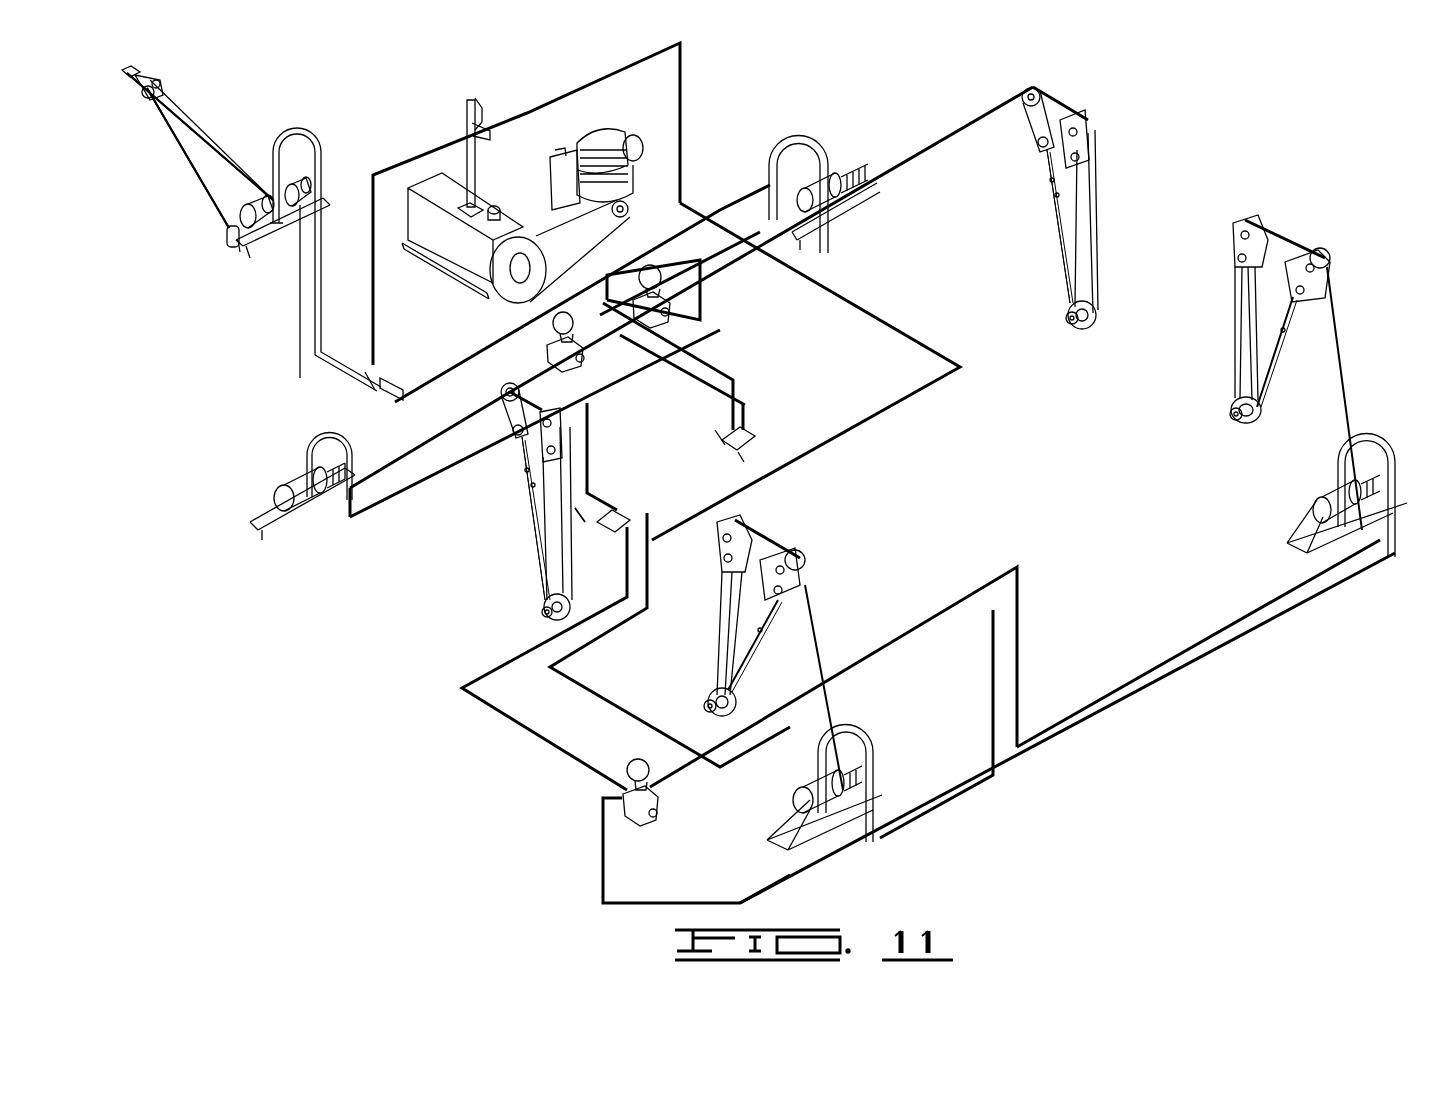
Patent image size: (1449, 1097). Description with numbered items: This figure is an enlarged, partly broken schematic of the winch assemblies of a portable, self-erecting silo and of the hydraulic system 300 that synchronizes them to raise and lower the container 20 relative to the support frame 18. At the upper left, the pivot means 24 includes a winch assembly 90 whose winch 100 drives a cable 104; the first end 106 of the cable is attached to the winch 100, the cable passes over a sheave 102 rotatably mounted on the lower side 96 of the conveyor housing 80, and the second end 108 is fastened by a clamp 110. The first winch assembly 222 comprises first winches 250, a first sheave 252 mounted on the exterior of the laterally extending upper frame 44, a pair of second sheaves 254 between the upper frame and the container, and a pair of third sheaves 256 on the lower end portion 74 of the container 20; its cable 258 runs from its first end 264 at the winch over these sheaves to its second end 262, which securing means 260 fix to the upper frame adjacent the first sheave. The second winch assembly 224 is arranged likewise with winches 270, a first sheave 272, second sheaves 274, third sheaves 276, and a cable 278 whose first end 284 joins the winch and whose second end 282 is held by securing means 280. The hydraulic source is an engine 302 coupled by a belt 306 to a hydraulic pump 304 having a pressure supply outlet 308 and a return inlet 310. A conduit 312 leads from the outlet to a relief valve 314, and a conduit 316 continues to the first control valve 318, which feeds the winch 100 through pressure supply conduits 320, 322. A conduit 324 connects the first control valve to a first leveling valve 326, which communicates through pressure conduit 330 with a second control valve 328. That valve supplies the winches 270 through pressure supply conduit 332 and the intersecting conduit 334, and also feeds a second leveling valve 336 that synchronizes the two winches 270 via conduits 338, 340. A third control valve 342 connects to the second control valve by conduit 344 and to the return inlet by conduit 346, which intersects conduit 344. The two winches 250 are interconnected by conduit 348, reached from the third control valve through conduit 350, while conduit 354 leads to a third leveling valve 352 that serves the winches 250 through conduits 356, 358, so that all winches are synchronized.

The hydraulic system 300 is at (752, 88).
The engine 302 is at (598, 118).
The hydraulic pump 304 is at (460, 258).
The belt 306 is at (575, 262).
The pressure supply outlet 308 is at (475, 203).
The return inlet 310 is at (462, 215).
The conduit 312 is at (476, 165).
The relief valve 314 is at (487, 127).
The conduit 316 is at (374, 292).
The first control valve 318 is at (400, 386).
The pressure supply conduit 320 is at (322, 278).
The pressure supply conduit 322 is at (299, 297).
The conduit 324 is at (518, 342).
The first leveling valve 326 is at (578, 372).
The second control valve 328 is at (610, 508).
The pressure conduit 330 is at (588, 443).
The pressure supply conduit 332 is at (648, 571).
The pressure supply conduit 334 is at (955, 800).
The second leveling valve 336 is at (652, 818).
The conduit 338 is at (805, 868).
The conduit 340 is at (930, 610).
The third control valve 342 is at (756, 430).
The conduit 344 is at (700, 410).
The conduit 346 is at (872, 312).
The conduit 348 is at (780, 270).
The conduit 350 is at (745, 408).
The third leveling valve 352 is at (650, 262).
The conduit 354 is at (712, 362).
The conduit 356 is at (372, 506).
The conduit 358 is at (690, 236).
The first winch 250 is at (300, 490).
The first winch assembly 222 is at (312, 510).
The first end of cable 264 is at (320, 455).
The first sheave 252 is at (507, 384).
The pair of second sheaves 254 is at (572, 420).
The pair of third sheaves 256 is at (568, 600).
The cable 258 is at (530, 560).
The securing means 260 is at (528, 470).
The second end of cable 262 is at (532, 488).
The support frame 18 is at (503, 440).
The laterally extending upper frame 44 is at (508, 414).
The lower end portion of container 74 is at (540, 610).
The container 20 is at (540, 622).
The pair of second sheaves 274 is at (745, 515).
The first sheave 272 is at (802, 550).
The pair of third sheaves 276 is at (738, 696).
The cable 278 is at (815, 610).
The securing means 280 is at (762, 628).
The second end of cable 282 is at (775, 600).
The first end of cable 284 is at (852, 752).
The winch 270 is at (845, 775).
The second winch assembly 224 is at (808, 790).
The pivot means 24 is at (186, 177).
The winch assembly 90 is at (217, 138).
The cable 104 is at (205, 130).
The clamp 110 is at (220, 212).
The conveyor housing 80 is at (145, 68).
The lower side of conveyor housing 96 is at (142, 98).
The sheave 102 is at (160, 84).
The second end of cable 108 is at (226, 238).
The winch 100 is at (250, 240).
The first end of cable 106 is at (300, 220).